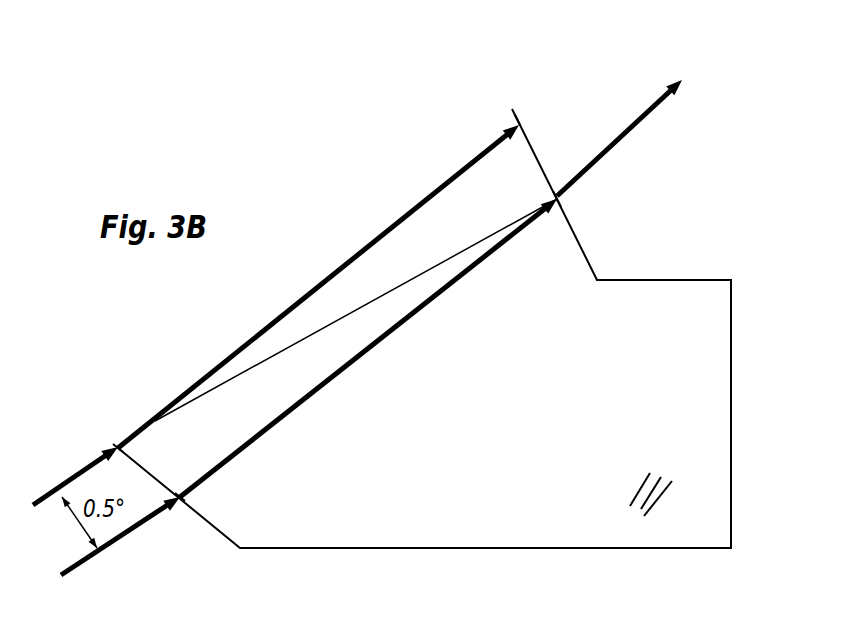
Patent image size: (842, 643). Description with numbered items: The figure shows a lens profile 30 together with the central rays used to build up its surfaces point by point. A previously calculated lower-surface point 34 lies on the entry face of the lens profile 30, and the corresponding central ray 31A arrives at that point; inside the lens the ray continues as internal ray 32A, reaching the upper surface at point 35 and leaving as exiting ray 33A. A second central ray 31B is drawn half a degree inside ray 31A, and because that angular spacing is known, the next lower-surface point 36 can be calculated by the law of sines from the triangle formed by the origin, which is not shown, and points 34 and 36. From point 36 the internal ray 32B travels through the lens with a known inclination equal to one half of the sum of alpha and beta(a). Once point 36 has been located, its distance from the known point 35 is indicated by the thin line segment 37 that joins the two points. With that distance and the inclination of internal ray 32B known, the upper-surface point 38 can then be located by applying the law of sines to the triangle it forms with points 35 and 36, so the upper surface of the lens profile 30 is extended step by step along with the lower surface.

The lens profile 30 is at (424, 331).
The central ray 31A is at (110, 555).
The central ray 31B is at (75, 474).
The internal ray 32A is at (368, 348).
The internal ray 32B is at (318, 286).
The exiting ray 33A is at (645, 124).
The lower-surface point 34 is at (181, 507).
The upper-surface point 35 is at (568, 200).
The lower-surface point 36 is at (113, 443).
The line segment 37 is at (263, 370).
The upper-surface point 38 is at (518, 112).